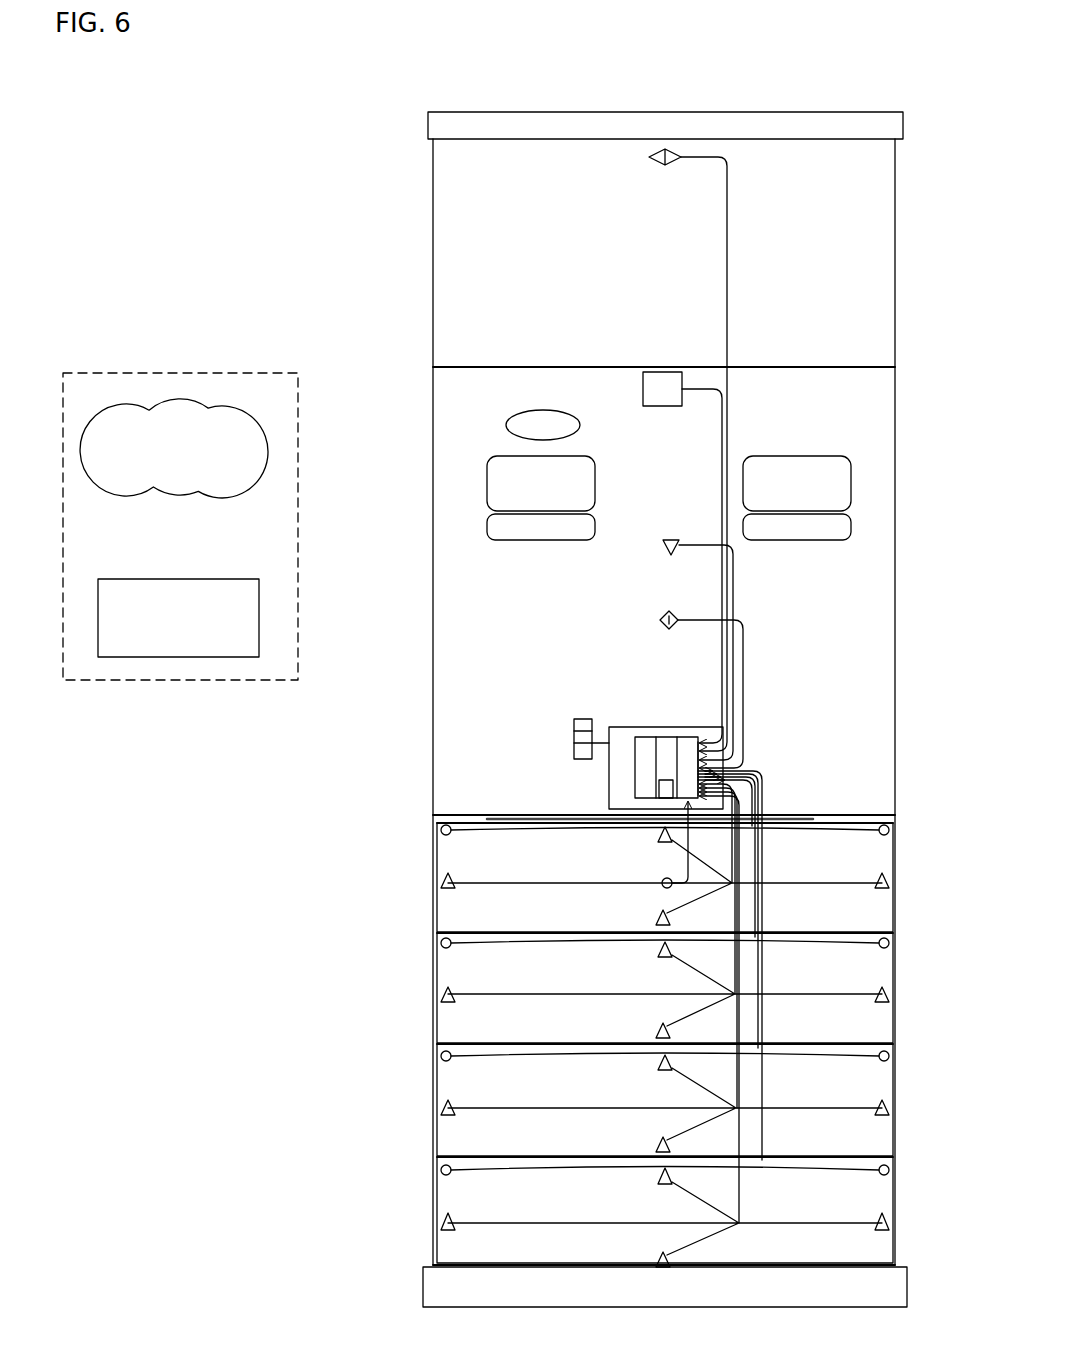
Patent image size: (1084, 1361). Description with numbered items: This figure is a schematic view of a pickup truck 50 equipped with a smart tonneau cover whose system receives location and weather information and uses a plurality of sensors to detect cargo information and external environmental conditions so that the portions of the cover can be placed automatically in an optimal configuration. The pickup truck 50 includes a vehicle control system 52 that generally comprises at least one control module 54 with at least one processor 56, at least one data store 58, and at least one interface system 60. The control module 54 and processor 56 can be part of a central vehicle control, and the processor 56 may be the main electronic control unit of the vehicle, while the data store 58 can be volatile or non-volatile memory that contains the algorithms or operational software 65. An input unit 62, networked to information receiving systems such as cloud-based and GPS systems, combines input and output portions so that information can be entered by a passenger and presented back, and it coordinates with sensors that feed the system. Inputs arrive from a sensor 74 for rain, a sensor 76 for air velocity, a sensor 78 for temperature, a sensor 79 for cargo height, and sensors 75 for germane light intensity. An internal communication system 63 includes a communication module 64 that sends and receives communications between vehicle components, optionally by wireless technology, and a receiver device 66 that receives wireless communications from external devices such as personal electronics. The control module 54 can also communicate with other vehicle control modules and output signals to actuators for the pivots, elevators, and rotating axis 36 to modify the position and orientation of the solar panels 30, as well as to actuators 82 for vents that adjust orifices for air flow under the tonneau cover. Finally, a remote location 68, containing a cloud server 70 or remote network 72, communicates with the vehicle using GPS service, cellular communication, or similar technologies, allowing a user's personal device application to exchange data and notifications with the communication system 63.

The solar panels 30 is at (452, 903).
The rotating axis 36 is at (445, 826).
The pickup truck 50 is at (527, 104).
The vehicle control system 52 is at (708, 726).
The control module 54 is at (636, 765).
The processor 56 is at (646, 740).
The data store 58 is at (666, 740).
The interface system 60 is at (688, 740).
The input unit 62 is at (663, 380).
The internal communication system 63 is at (588, 719).
The communication module 64 is at (574, 738).
The operational software 65 is at (665, 797).
The receiver device 66 is at (580, 750).
The remote location 68 is at (192, 372).
The cloud server 70 is at (268, 450).
The remote network 72 is at (259, 618).
The sensor 74 is at (665, 148).
The sensor 75 is at (447, 873).
The sensor 76 is at (668, 539).
The sensor 78 is at (666, 612).
The sensor 79 is at (660, 882).
The actuators 82 is at (783, 815).